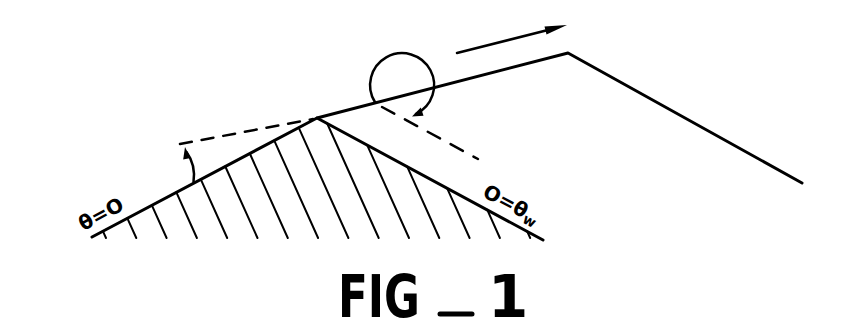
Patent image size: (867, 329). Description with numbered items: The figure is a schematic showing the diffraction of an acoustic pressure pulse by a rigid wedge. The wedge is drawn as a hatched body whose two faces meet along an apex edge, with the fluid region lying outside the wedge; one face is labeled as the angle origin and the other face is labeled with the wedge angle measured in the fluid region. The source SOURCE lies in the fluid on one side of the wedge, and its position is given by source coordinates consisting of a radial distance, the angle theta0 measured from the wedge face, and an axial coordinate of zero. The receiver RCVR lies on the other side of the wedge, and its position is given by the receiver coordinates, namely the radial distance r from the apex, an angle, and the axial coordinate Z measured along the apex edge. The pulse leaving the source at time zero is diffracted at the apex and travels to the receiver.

The source SOURCE is at (209, 129).
The receiver RCVR is at (468, 140).
The receiver radial coordinate r is at (410, 87).
The receiver axial coordinate Z is at (524, 31).
The source angle theta0 is at (173, 148).